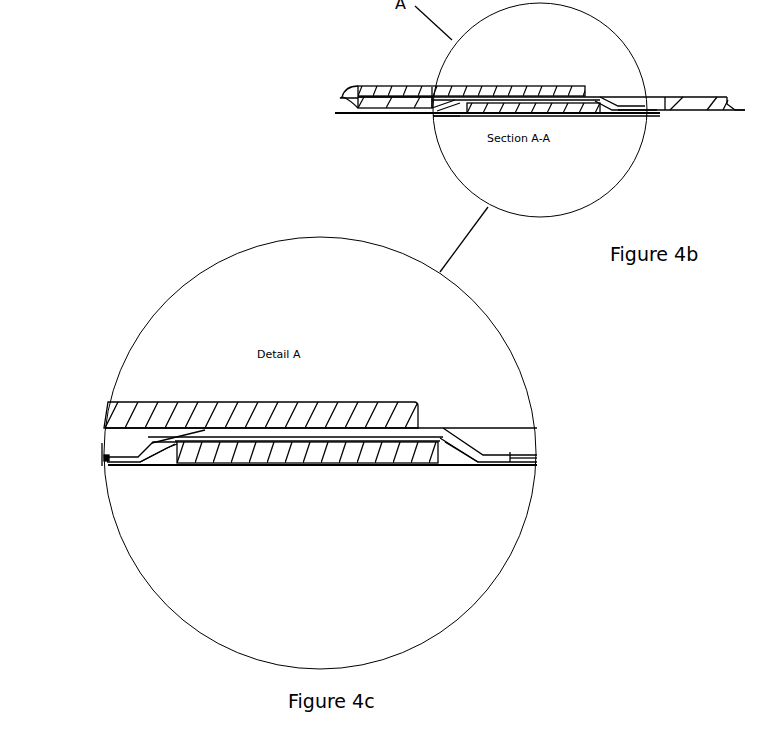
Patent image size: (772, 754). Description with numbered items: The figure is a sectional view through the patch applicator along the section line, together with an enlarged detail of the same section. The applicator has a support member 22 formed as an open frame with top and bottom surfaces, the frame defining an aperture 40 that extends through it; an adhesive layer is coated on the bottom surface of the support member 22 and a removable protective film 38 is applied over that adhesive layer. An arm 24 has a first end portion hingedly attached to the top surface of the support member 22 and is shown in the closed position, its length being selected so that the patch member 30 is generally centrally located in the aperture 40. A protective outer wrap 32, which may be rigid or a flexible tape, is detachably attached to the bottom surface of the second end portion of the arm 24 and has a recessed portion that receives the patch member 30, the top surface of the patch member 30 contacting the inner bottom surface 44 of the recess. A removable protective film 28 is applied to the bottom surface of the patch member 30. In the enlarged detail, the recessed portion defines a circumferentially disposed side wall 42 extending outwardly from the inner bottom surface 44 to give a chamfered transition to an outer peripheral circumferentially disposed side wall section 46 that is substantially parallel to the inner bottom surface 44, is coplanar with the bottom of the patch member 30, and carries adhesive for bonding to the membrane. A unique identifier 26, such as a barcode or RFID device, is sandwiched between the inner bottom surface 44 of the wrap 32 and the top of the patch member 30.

In FIG. 4b, the support member 22 is at (705, 100).
In FIG. 4b, the arm 24 is at (423, 88).
In FIG. 4b, the unique identifier 26 is at (502, 100).
In FIG. 4c, the unique identifier 26 is at (312, 437).
In FIG. 4b, the removable protective film 28 is at (605, 117).
In FIG. 4c, the removable protective film 28 is at (210, 470).
In FIG. 4b, the patch member 30 is at (485, 118).
In FIG. 4c, the patch member 30 is at (342, 450).
In FIG. 4b, the protective outer wrap 32 is at (595, 100).
In FIG. 4c, the protective outer wrap 32 is at (325, 432).
In FIG. 4b, the removable protective film 38 is at (455, 115).
In FIG. 4b, the aperture 40 is at (637, 102).
In FIG. 4c, the circumferentially disposed side wall 42 is at (148, 442).
In FIG. 4c, the inner bottom surface 44 is at (175, 443).
In FIG. 4c, the outer peripheral circumferentially disposed side wall section 46 is at (108, 462).